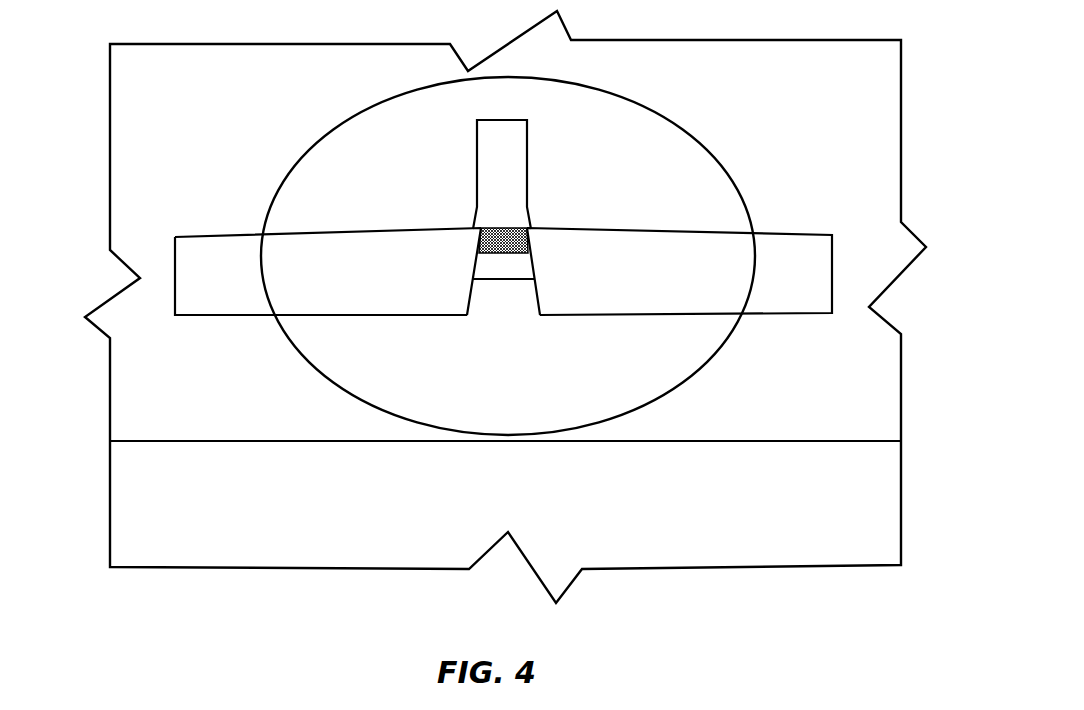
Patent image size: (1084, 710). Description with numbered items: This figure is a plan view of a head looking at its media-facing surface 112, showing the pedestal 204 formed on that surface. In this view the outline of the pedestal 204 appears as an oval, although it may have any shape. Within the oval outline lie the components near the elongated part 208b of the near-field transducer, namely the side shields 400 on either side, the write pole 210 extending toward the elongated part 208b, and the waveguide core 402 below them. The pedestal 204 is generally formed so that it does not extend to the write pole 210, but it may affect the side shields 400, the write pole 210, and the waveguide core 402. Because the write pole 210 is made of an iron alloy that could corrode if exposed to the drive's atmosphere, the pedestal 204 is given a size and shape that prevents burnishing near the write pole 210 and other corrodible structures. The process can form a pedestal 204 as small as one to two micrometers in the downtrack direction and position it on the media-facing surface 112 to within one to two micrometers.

The media-facing surface 112 is at (124, 78).
The pedestal 204 is at (678, 125).
The elongated part of the NFT 208b is at (520, 227).
The write pole 210 is at (522, 160).
The side shields 400 is at (215, 304).
The waveguide core 402 is at (883, 467).